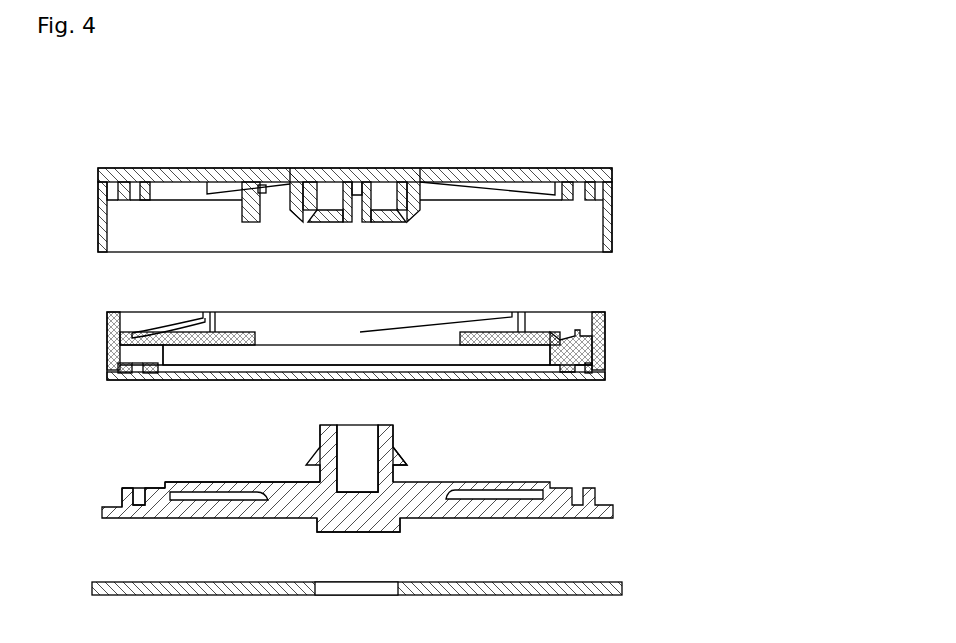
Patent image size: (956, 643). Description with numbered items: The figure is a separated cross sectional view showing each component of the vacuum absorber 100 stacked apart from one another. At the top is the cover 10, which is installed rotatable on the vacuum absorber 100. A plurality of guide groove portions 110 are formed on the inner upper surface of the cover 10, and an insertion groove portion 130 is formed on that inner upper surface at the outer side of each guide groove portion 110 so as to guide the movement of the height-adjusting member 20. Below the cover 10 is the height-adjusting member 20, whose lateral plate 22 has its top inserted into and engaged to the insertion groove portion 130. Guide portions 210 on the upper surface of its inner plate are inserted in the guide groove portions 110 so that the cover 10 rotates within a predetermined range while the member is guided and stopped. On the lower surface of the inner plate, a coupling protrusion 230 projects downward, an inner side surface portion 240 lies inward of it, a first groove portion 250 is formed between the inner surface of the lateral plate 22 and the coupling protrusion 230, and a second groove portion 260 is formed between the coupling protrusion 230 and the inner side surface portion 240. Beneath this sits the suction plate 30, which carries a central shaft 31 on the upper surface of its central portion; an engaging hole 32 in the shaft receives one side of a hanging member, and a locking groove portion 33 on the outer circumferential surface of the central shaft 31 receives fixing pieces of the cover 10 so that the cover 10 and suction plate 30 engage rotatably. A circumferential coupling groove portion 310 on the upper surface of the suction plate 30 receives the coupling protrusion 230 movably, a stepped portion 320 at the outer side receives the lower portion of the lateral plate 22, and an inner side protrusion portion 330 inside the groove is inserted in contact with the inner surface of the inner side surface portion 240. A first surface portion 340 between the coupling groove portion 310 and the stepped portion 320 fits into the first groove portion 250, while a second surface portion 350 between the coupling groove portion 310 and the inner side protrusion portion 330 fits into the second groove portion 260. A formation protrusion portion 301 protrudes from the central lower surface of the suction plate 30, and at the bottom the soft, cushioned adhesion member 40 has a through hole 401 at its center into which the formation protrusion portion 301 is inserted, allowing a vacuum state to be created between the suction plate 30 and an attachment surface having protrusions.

The vacuum absorber 100 is at (550, 103).
The cover 10 is at (597, 167).
The guide groove portion 110 is at (162, 166).
The insertion groove portion 130 is at (98, 183).
The height-adjusting member 20 is at (598, 310).
The lateral plate 22 is at (104, 312).
The guide portion 210 is at (170, 315).
The first groove portion 250 is at (125, 378).
The coupling protrusion 230 is at (138, 378).
The second groove portion 260 is at (148, 378).
The inner side surface portion 240 is at (156, 378).
The suction plate 30 is at (595, 482).
The central shaft 31 is at (400, 432).
The engaging hole 32 is at (355, 428).
The locking groove portion 33 is at (410, 470).
The coupling groove portion 310 is at (148, 487).
The second surface portion 350 is at (160, 487).
The inner side protrusion portion 330 is at (170, 484).
The first surface portion 340 is at (122, 490).
The stepped portion 320 is at (108, 496).
The formation protrusion portion 301 is at (378, 533).
The adhesion member 40 is at (605, 580).
The through hole 401 is at (368, 592).